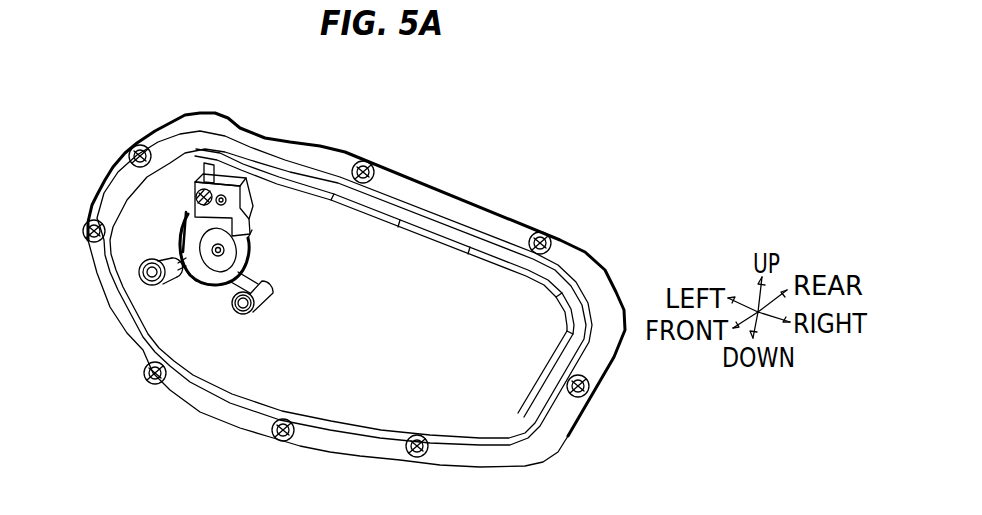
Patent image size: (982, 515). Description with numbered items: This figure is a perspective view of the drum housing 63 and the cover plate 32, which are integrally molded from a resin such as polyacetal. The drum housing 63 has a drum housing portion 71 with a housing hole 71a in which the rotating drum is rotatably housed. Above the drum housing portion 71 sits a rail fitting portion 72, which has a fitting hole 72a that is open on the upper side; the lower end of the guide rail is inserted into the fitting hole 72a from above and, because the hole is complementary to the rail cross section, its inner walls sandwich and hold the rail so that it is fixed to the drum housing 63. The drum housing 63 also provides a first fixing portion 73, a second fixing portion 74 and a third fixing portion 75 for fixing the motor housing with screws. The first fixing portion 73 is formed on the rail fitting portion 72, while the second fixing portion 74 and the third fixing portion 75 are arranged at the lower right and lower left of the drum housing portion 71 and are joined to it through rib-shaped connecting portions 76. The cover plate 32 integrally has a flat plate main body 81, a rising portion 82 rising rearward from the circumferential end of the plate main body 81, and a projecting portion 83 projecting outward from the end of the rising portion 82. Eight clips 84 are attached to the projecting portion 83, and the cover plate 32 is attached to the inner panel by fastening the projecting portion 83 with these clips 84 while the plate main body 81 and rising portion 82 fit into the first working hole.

The cover plate 32 is at (587, 246).
The drum housing 63 is at (178, 235).
The drum housing portion 71 is at (205, 283).
The housing hole 71a is at (196, 272).
The rail fitting portion 72 is at (243, 197).
The fitting hole 72a is at (218, 184).
The first fixing portion 73 is at (197, 191).
The second fixing portion 74 is at (247, 305).
The third fixing portion 75 is at (143, 280).
The connecting portion 76 is at (160, 262).
The plate main body 81 is at (392, 232).
The rising portion 82 is at (438, 222).
The projecting portion 83 is at (485, 226).
The clip 84 is at (137, 146).